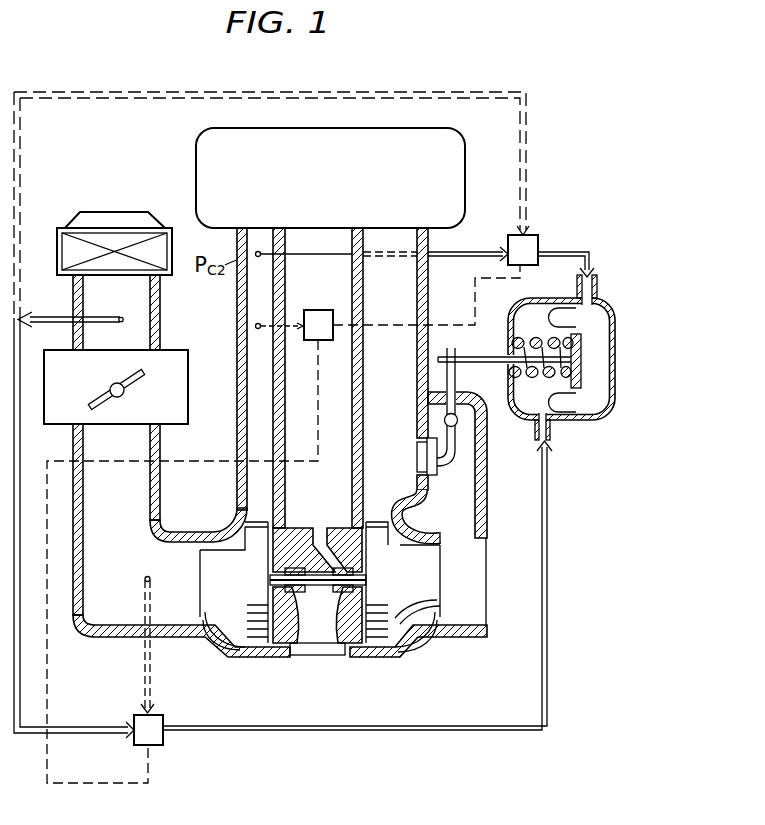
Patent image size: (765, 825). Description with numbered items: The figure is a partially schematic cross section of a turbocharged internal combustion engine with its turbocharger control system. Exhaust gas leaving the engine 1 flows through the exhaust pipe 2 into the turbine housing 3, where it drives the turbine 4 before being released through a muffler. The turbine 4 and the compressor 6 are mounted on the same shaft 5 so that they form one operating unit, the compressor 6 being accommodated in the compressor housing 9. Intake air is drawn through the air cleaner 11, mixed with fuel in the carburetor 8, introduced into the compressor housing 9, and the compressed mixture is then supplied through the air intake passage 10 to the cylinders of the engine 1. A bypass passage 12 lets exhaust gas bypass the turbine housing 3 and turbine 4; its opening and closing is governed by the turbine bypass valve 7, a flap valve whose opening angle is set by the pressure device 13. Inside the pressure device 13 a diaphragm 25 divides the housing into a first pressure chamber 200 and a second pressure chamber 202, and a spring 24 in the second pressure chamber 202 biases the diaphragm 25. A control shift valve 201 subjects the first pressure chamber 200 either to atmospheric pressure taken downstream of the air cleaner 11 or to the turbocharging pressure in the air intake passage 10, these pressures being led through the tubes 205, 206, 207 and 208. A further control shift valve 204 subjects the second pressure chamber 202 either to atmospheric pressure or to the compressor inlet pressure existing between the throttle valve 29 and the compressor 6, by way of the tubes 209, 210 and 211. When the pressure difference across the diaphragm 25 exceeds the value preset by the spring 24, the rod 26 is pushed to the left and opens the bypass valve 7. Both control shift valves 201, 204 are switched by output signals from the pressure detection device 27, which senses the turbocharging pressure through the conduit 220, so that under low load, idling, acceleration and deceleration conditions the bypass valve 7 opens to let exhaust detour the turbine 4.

The engine 1 is at (457, 153).
The exhaust pipe 2 is at (377, 435).
The turbine housing 3 is at (428, 623).
The turbine 4 is at (412, 643).
The shaft 5 is at (318, 585).
The compressor 6 is at (233, 647).
The turbine bypass valve 7 is at (423, 458).
The carburetor 8 is at (133, 328).
The compressor housing 9 is at (265, 652).
The air intake passage 10 is at (258, 297).
The air cleaner 11 is at (127, 240).
The bypass passage 12 is at (453, 503).
The pressure device 13 is at (545, 364).
The spring 24 is at (580, 348).
The diaphragm 25 is at (580, 375).
The rod 26 is at (480, 357).
The pressure detection device 27 is at (318, 318).
The throttle valve 29 is at (143, 373).
The first pressure chamber 200 is at (597, 327).
The control shift valve 201 is at (535, 237).
The second pressure chamber 202 is at (527, 403).
The control shift valve 204 is at (153, 740).
The tube 205 is at (53, 318).
The tube 206 is at (83, 92).
The tube 207 is at (565, 250).
The tube 208 is at (477, 250).
The tube 209 is at (372, 325).
The tube 210 is at (152, 653).
The tube 211 is at (340, 732).
The conduit 220 is at (247, 338).